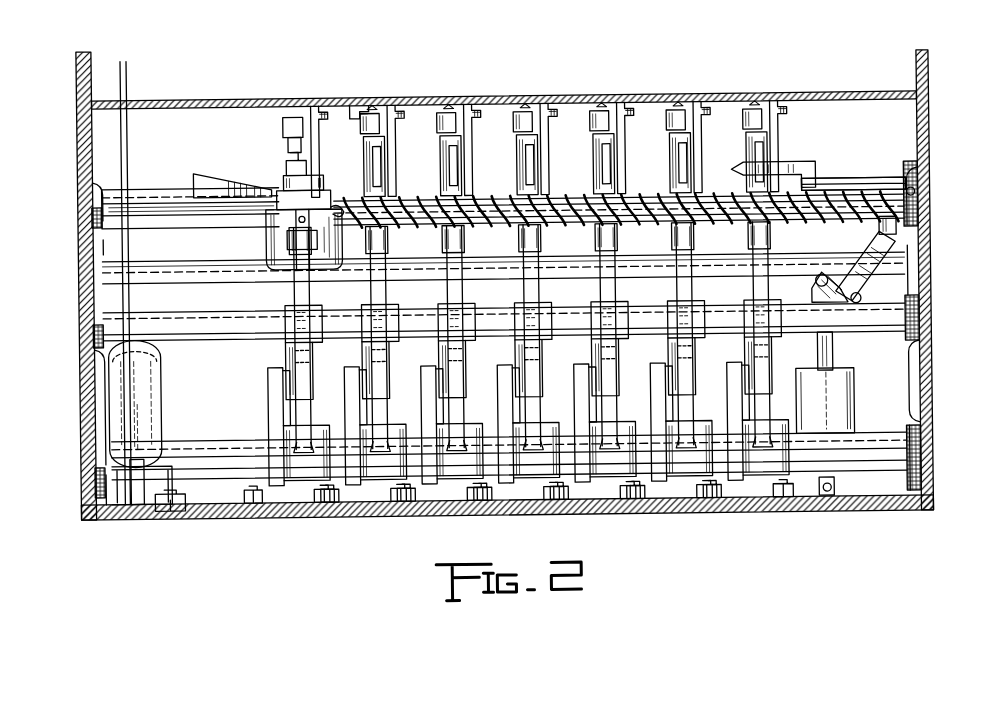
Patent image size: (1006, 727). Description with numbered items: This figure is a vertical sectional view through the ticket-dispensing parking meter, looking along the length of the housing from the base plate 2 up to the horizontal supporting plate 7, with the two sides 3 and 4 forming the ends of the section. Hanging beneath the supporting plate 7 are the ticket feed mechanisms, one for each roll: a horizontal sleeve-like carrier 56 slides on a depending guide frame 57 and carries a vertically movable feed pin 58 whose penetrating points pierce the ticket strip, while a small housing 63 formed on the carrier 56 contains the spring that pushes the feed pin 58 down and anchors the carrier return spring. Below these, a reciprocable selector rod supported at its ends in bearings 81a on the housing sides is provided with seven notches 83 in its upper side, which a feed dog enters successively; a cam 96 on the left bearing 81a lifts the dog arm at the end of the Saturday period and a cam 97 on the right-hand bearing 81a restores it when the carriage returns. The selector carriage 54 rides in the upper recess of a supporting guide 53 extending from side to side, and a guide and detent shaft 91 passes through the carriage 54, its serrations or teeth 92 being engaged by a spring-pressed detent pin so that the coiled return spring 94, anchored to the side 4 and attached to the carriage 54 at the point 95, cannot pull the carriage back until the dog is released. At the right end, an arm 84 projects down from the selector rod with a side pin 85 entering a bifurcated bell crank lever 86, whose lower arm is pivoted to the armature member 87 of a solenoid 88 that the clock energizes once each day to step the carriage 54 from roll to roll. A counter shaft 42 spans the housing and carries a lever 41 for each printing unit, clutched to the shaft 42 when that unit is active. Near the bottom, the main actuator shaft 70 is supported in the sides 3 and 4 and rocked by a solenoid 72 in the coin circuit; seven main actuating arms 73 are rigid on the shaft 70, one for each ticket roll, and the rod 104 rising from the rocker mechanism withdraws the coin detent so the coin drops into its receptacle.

The bottom or base plate 2 is at (366, 518).
The side 3 is at (79, 355).
The side 4 is at (931, 312).
The horizontal supporting plate 7 is at (414, 97).
The lever 41 is at (284, 345).
The counter shaft 42 is at (214, 318).
The supporting guide 53 is at (190, 284).
The selector carriage 54 is at (333, 240).
The horizontal sleeve-like carrier 56 is at (392, 160).
The guide frame 57 is at (313, 140).
The feed pin 58 is at (378, 108).
The small housing 63 is at (518, 136).
The main actuator shaft 70 is at (198, 436).
The solenoid 72 is at (163, 378).
The main actuating arms 73 is at (306, 416).
The bearings 81a is at (142, 224).
The notches 83 is at (448, 196).
The arm 84 is at (880, 232).
The side pin 85 is at (884, 250).
The bell crank lever 86 is at (874, 286).
The armature member 87 is at (833, 352).
The solenoid 88 is at (853, 396).
The guide and detent shaft 91 is at (224, 224).
The serrations or teeth 92 is at (265, 226).
The coiled spring 94 is at (830, 185).
The point 95 is at (331, 202).
The cam 96 is at (220, 178).
The cam 97 is at (789, 164).
The rod 104 is at (129, 142).